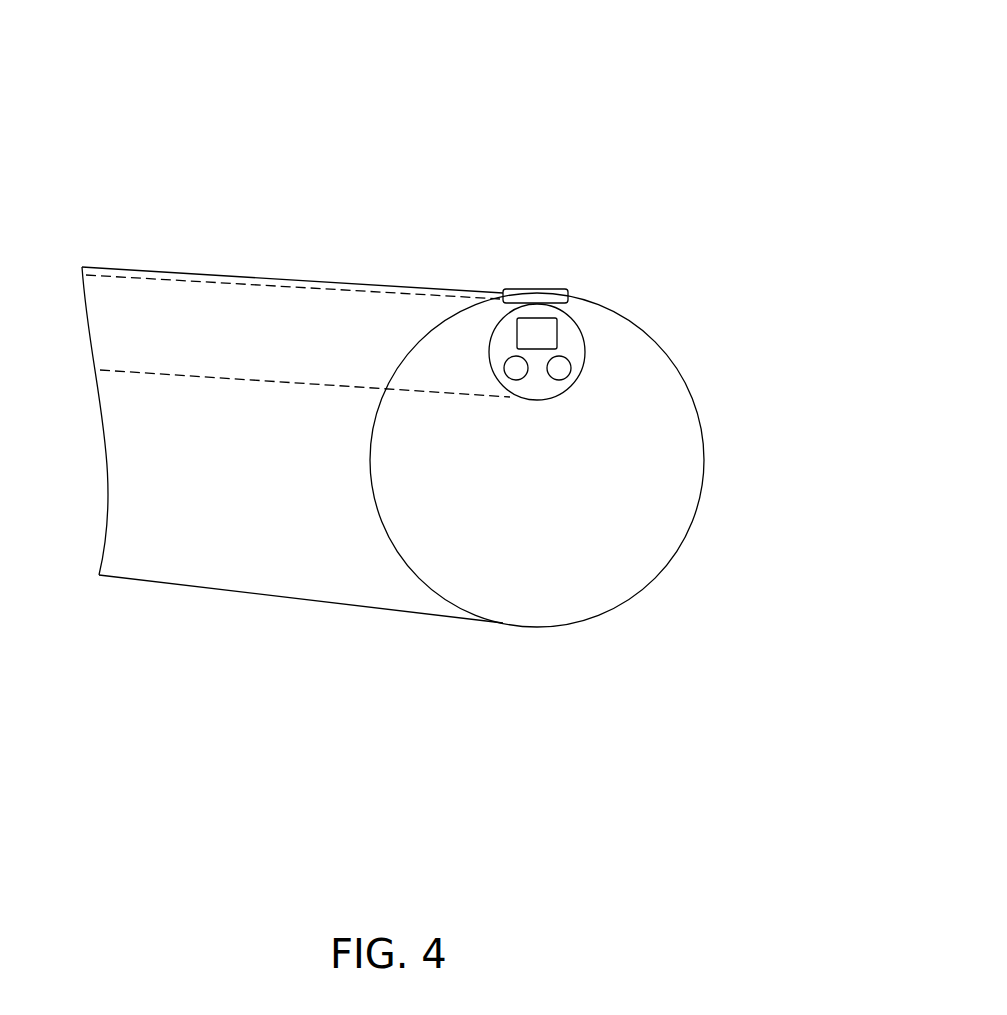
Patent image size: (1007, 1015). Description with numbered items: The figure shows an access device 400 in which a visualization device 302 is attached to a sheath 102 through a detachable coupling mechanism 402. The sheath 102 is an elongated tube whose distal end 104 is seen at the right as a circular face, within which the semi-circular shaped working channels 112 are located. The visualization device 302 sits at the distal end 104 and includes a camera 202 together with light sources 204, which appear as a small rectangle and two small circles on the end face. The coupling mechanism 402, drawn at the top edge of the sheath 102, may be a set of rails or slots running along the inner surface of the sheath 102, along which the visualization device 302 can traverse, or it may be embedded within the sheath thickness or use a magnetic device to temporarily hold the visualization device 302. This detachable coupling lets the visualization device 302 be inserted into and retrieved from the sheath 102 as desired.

The access device 400 is at (578, 64).
The sheath 102 is at (462, 265).
The visualization device 302 is at (342, 305).
The distal end 104 is at (697, 402).
The working channel 112 is at (680, 479).
The detachable coupling mechanism 402 is at (553, 290).
The camera 202 is at (557, 332).
The light source 204 is at (560, 352).